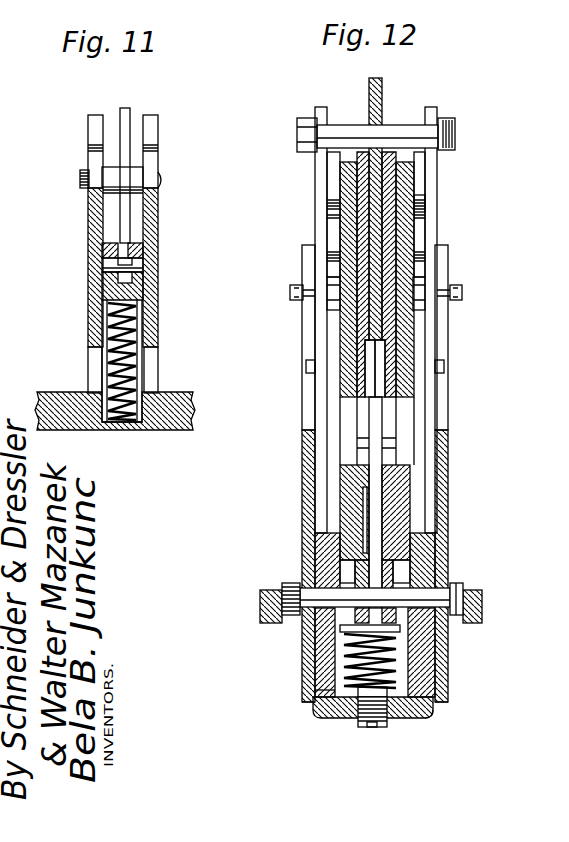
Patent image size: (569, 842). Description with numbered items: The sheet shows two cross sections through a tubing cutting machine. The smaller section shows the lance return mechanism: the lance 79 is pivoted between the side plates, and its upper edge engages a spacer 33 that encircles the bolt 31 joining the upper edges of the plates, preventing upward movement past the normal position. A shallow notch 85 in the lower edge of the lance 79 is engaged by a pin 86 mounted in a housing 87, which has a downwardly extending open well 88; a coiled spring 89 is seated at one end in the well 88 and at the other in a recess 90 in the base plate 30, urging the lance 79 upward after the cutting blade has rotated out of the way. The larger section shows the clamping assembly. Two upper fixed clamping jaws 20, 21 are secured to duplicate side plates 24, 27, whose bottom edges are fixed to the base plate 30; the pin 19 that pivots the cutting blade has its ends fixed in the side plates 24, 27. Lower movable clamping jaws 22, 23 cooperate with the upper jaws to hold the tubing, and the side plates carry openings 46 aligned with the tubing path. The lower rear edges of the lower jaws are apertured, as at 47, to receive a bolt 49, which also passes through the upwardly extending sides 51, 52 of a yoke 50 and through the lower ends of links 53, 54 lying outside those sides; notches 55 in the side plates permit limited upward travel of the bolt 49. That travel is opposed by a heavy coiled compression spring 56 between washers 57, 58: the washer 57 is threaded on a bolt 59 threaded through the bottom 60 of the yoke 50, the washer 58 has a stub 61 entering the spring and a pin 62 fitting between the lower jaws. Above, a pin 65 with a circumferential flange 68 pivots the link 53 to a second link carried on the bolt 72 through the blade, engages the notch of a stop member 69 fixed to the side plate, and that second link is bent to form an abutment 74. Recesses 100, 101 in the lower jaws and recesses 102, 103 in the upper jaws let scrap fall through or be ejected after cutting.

In FIG. 12, the pin 19 is at (430, 265).
In FIG. 12, the upper fixed clamping jaw 20 is at (428, 173).
In FIG. 12, the upper fixed clamping jaw 21 is at (340, 175).
In FIG. 12, the lower movable clamping jaw 22 is at (388, 517).
In FIG. 12, the lower movable clamping jaw 23 is at (355, 478).
In FIG. 12, the side plate 24 is at (418, 200).
In FIG. 12, the side plate 27 is at (343, 197).
In FIG. 11, the base plate 30 is at (195, 400).
In FIG. 12, the base plate 30 is at (262, 601).
In FIG. 11, the bolt 31 is at (80, 179).
In FIG. 11, the spacer 33 is at (113, 175).
In FIG. 12, the opening 46 is at (345, 578).
In FIG. 12, the aperture 47 is at (410, 573).
In FIG. 12, the bolt 49 is at (457, 596).
In FIG. 12, the yoke 50 is at (448, 690).
In FIG. 12, the yoke side 51 is at (318, 652).
In FIG. 12, the yoke side 52 is at (430, 678).
In FIG. 12, the link 53 is at (335, 675).
In FIG. 12, the link 54 is at (437, 706).
In FIG. 12, the notch 55 is at (318, 545).
In FIG. 12, the coiled compression spring 56 is at (302, 692).
In FIG. 12, the washer 57 is at (312, 712).
In FIG. 12, the washer 58 is at (340, 628).
In FIG. 12, the bolt 59 is at (385, 726).
In FIG. 12, the yoke bottom 60 is at (427, 714).
In FIG. 12, the stub 61 is at (395, 640).
In FIG. 12, the pin 62 is at (398, 614).
In FIG. 12, the pin 65 is at (457, 285).
In FIG. 12, the circumferential flange 68 is at (333, 275).
In FIG. 12, the stop member 69 is at (333, 222).
In FIG. 12, the bolt 72 is at (402, 132).
In FIG. 12, the abutment 74 is at (310, 363).
In FIG. 11, the lance 79 is at (125, 128).
In FIG. 11, the shallow notch 85 is at (102, 267).
In FIG. 11, the pin 86 is at (140, 262).
In FIG. 11, the housing 87 is at (158, 291).
In FIG. 11, the well 88 is at (107, 330).
In FIG. 11, the coiled spring 89 is at (105, 377).
In FIG. 11, the recess 90 is at (140, 393).
In FIG. 12, the recess 100 is at (385, 537).
In FIG. 12, the recess 101 is at (363, 503).
In FIG. 12, the recess 102 is at (385, 352).
In FIG. 12, the recess 103 is at (365, 352).